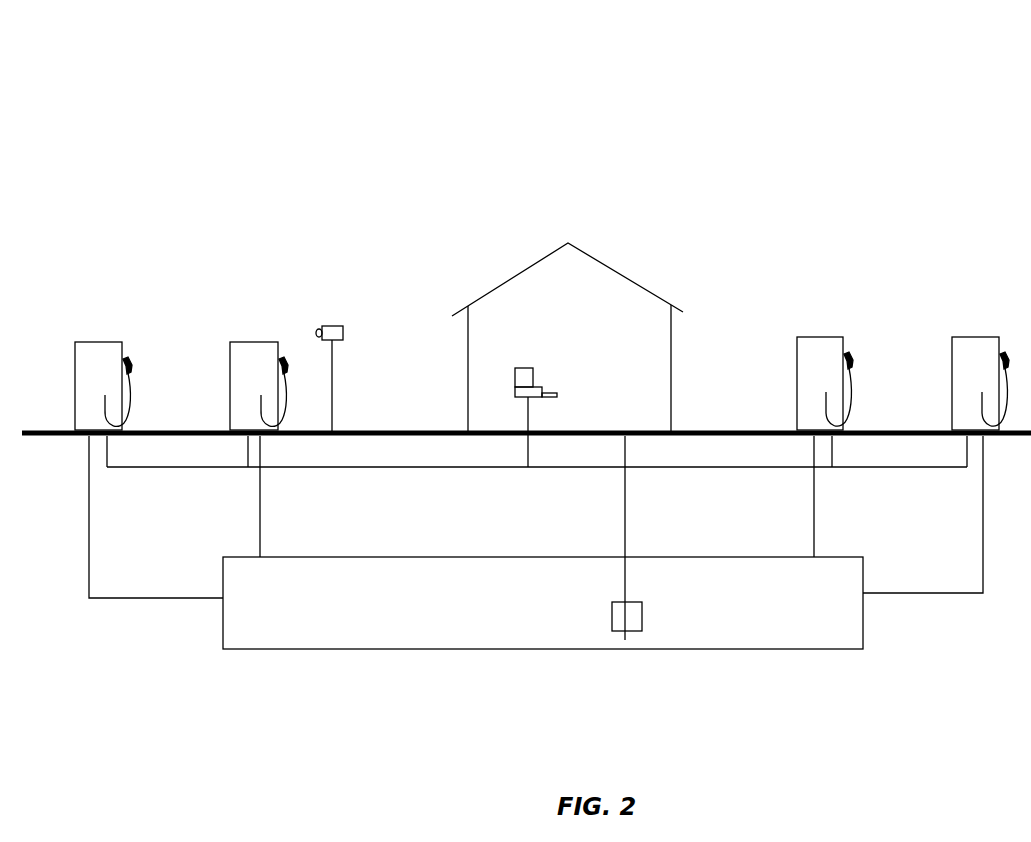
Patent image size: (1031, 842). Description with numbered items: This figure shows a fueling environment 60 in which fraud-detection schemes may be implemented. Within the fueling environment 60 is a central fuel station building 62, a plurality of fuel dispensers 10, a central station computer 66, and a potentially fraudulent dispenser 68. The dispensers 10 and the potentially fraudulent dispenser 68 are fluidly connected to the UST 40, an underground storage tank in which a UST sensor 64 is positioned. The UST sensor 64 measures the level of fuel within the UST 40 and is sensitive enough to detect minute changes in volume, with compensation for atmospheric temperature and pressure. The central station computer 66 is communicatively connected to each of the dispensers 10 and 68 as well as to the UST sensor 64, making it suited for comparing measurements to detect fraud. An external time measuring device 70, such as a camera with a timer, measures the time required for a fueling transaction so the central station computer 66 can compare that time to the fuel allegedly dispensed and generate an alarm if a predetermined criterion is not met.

The fuel dispenser 10 is at (97, 329).
The UST 40 is at (772, 649).
The fueling environment 60 is at (723, 105).
The central fuel station building 62 is at (627, 258).
The UST sensor 64 is at (642, 618).
The central station computer 66 is at (515, 390).
The potentially fraudulent dispenser 68 is at (973, 328).
The external time measuring device 70 is at (333, 325).